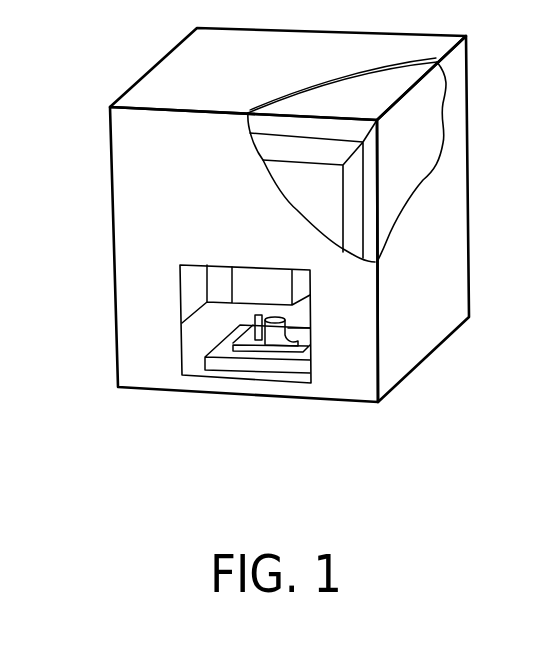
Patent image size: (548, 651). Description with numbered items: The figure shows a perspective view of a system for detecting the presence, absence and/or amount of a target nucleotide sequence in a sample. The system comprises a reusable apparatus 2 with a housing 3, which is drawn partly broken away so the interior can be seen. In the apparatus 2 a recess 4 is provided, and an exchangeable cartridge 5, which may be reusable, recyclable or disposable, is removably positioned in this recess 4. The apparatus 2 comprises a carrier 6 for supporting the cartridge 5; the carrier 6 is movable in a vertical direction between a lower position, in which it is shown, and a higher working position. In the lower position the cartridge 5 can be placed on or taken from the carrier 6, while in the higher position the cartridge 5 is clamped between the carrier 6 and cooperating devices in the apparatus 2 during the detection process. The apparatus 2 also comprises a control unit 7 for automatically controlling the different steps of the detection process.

The reusable apparatus 2 is at (162, 180).
The housing 3 is at (180, 60).
The recess 4 is at (240, 285).
The exchangeable cartridge 5 is at (253, 343).
The carrier 6 is at (222, 353).
The control unit 7 is at (332, 198).